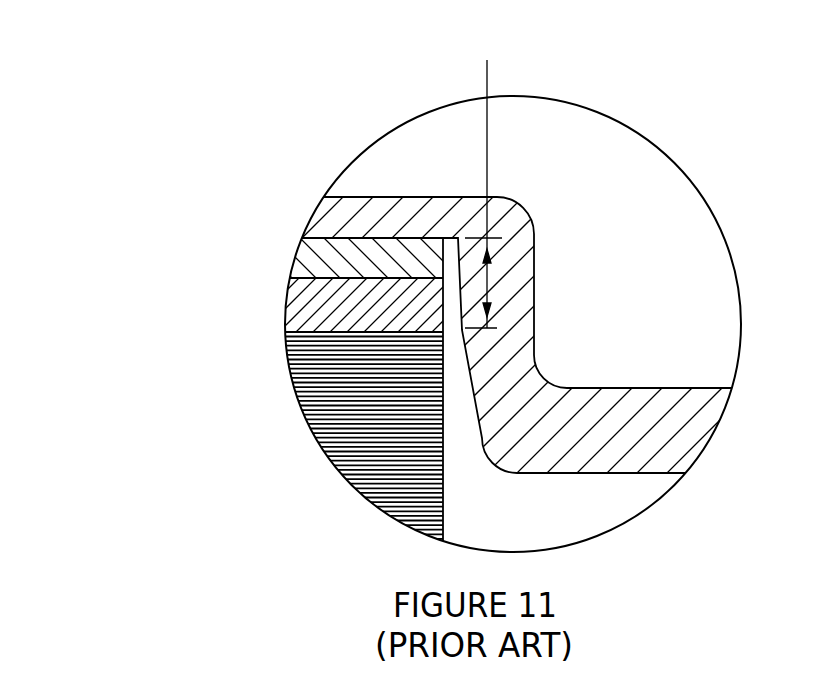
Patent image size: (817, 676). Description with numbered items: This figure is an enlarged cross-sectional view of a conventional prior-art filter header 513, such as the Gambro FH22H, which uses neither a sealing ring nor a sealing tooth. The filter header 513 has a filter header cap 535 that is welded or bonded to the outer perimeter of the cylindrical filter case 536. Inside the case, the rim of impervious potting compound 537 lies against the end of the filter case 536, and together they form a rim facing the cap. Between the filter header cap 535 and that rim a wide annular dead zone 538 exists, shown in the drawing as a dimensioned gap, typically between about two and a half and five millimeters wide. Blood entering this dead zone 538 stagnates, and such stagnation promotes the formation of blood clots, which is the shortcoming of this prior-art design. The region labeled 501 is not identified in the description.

The substrate 501 is at (368, 465).
The filter header 513 is at (203, 415).
The filter header cap 535 is at (602, 413).
The cylindrical filter case 536 is at (333, 253).
The impervious potting compound 537 is at (323, 305).
The annular dead zone 538 is at (487, 60).